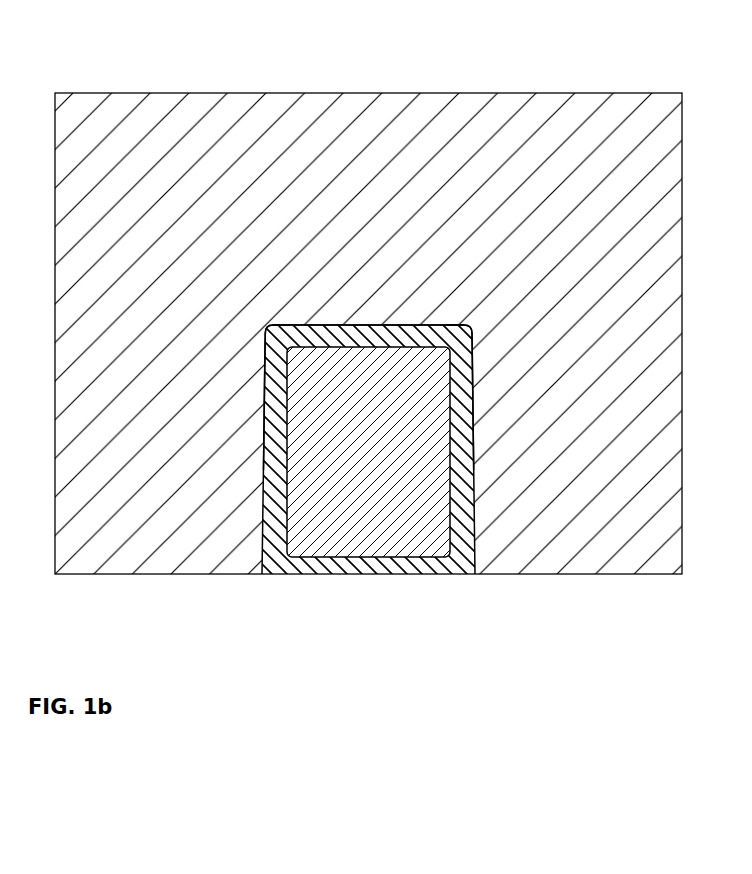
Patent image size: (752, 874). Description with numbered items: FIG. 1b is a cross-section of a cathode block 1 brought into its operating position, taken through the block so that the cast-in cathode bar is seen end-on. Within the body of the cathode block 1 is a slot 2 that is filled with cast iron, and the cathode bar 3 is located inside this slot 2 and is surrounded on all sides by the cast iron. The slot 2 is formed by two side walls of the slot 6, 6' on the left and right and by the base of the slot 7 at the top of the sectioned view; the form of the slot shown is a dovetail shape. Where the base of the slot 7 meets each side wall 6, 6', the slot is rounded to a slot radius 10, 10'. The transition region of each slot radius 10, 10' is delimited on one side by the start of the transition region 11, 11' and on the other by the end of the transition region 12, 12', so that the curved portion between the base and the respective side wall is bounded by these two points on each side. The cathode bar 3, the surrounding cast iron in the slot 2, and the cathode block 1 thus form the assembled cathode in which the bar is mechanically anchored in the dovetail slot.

The cathode block 1 is at (168, 545).
The slot 2 is at (300, 577).
The cathode bar 3 is at (363, 530).
The side wall of slot 6 is at (148, 439).
The side wall of slot 6' is at (592, 438).
The base of the slot 7 is at (370, 325).
The slot radius 10 is at (145, 319).
The slot radius 10' is at (595, 319).
The start of transition region 11 is at (157, 280).
The start of transition region 11' is at (583, 279).
The end of transition region 12 is at (146, 376).
The end of transition region 12' is at (595, 373).